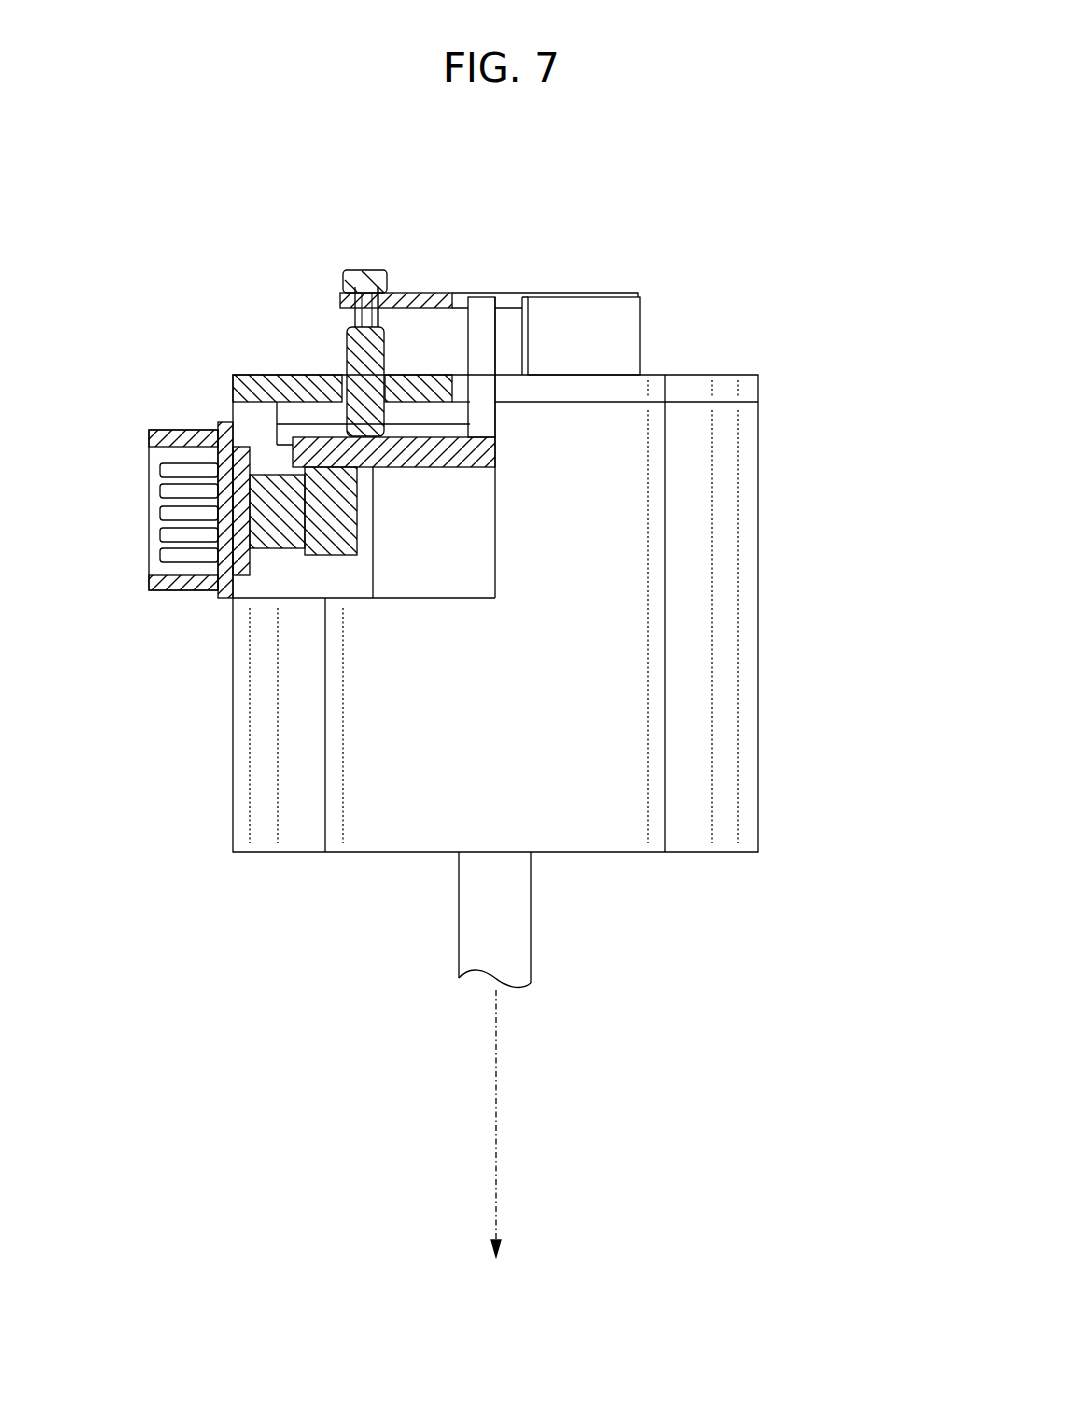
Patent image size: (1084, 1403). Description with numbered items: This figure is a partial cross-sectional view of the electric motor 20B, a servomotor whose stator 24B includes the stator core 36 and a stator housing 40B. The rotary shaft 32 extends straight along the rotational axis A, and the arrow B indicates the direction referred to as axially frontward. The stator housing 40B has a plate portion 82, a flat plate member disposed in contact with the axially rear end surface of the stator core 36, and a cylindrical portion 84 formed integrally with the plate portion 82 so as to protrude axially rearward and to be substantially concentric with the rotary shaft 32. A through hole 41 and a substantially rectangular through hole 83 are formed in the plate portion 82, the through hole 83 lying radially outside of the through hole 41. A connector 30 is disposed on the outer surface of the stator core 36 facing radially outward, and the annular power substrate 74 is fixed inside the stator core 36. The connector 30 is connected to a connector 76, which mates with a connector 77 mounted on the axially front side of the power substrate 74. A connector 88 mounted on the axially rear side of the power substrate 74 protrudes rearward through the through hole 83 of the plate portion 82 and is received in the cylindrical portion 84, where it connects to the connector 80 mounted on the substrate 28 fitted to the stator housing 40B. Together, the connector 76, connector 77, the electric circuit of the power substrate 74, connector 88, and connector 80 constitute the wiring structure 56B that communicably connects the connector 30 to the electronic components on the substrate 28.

The electric motor 20B is at (792, 154).
The stator 24B is at (817, 523).
The substrate 28 is at (427, 292).
The connector 30 is at (150, 440).
The rotary shaft 32 is at (531, 910).
The stator core 36 is at (758, 615).
The stator housing 40B is at (740, 320).
The through hole 41 is at (458, 375).
The wiring structure 56B is at (327, 302).
The power substrate 74 is at (427, 468).
The connector 76 is at (277, 540).
The connector 77 is at (320, 550).
The connector 80 is at (362, 268).
The plate portion 82 is at (750, 388).
The through hole 83 is at (340, 375).
The cylindrical portion 84 is at (601, 351).
The connector 88 is at (357, 340).
The rotational axis A is at (496, 1110).
The arrow B is at (518, 1221).